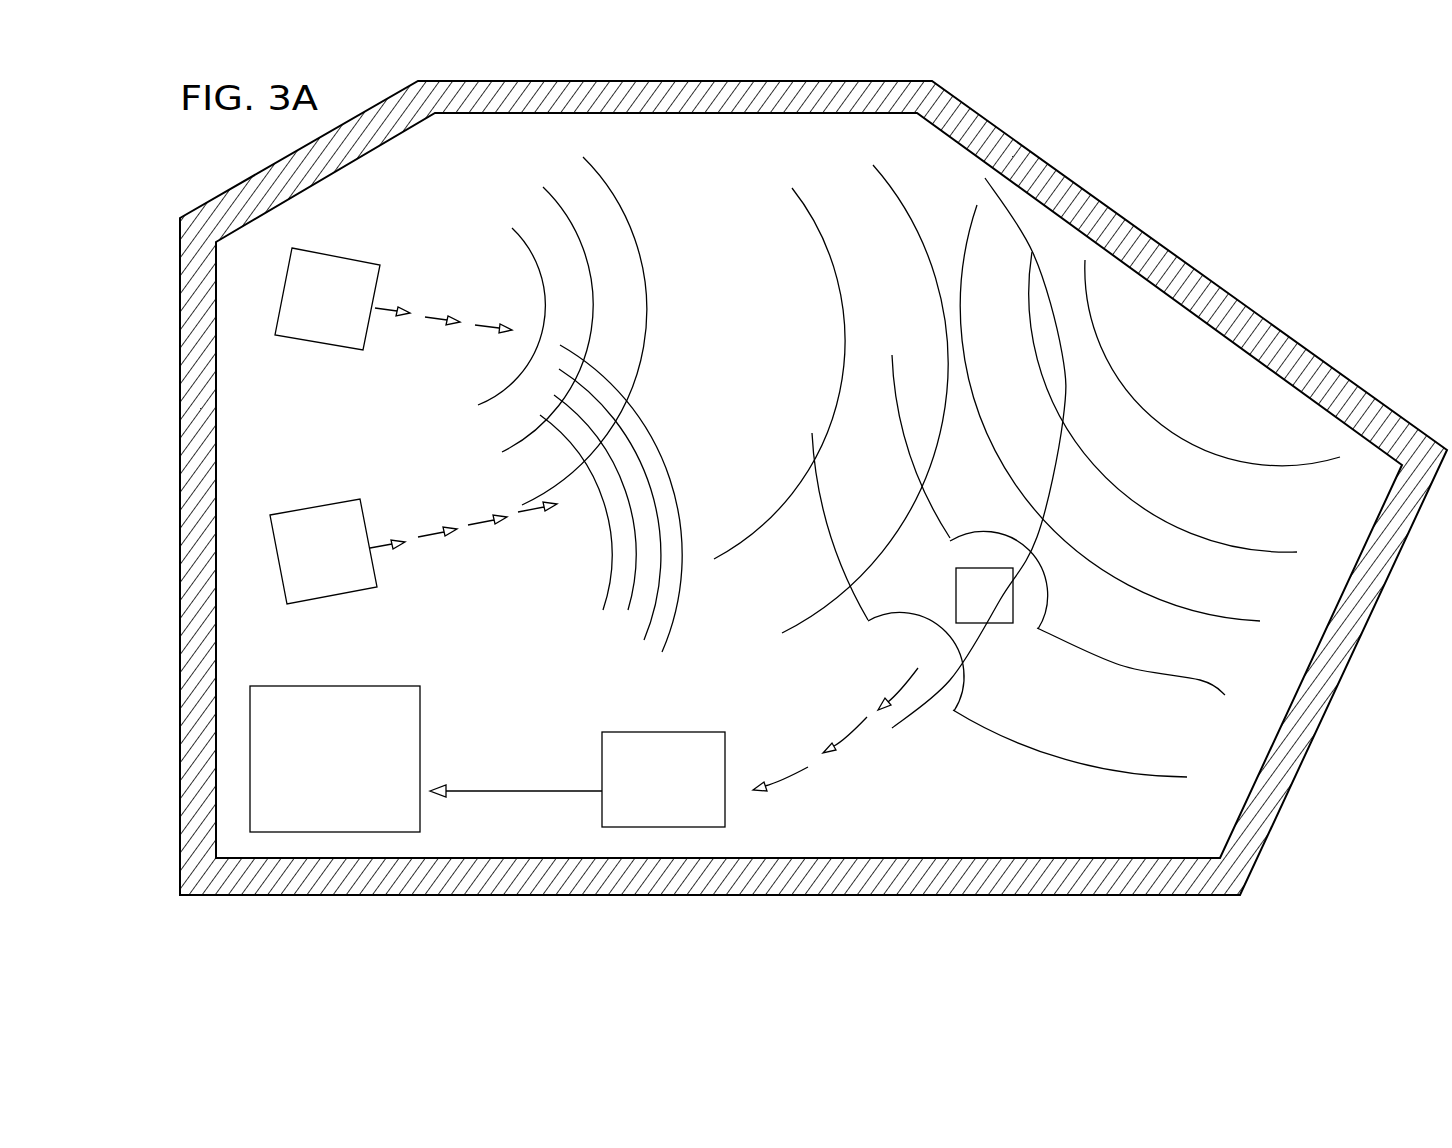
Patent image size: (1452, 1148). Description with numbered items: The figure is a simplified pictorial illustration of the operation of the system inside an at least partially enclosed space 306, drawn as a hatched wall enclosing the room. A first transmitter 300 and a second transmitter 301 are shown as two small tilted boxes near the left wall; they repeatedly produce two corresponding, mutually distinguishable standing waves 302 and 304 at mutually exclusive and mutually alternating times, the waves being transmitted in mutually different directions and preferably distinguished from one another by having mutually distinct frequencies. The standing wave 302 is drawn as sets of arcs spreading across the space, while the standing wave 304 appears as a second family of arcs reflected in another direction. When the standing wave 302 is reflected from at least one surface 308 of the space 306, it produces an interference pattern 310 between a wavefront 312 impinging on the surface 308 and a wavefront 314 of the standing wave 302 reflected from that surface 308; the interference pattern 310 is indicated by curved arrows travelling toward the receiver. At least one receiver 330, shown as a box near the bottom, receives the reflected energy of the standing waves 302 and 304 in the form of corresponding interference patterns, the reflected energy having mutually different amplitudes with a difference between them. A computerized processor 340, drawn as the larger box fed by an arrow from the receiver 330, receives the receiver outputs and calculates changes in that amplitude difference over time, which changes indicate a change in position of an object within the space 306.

The first transmitter 300 is at (285, 293).
The second transmitter 301 is at (271, 527).
The standing wave 302 is at (560, 139).
The standing wave 304 is at (562, 340).
The at least partially enclosed space 306 is at (1142, 188).
The surface 308 is at (1213, 300).
The interference pattern 310 is at (843, 744).
The wavefront 312 is at (1088, 446).
The wavefront 314 is at (1086, 768).
The receiver 330 is at (618, 732).
The computerized processor 340 is at (308, 686).